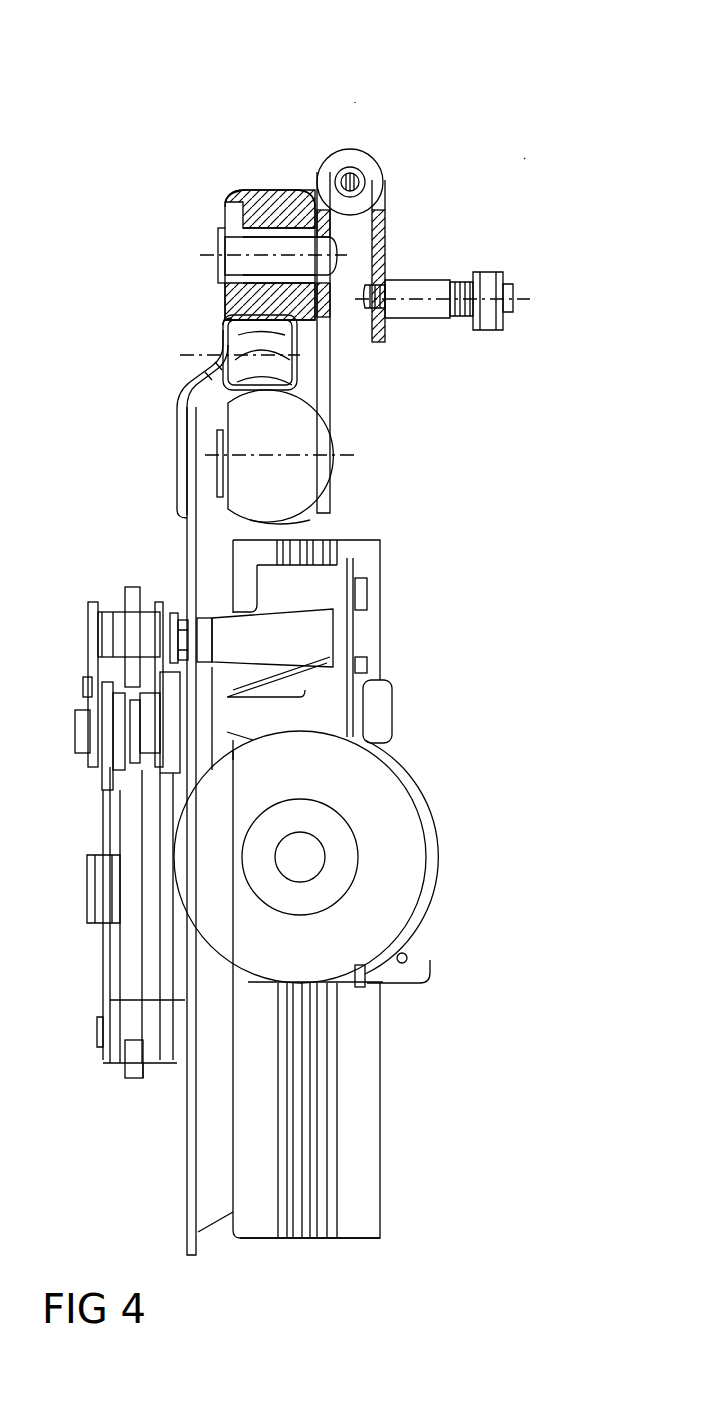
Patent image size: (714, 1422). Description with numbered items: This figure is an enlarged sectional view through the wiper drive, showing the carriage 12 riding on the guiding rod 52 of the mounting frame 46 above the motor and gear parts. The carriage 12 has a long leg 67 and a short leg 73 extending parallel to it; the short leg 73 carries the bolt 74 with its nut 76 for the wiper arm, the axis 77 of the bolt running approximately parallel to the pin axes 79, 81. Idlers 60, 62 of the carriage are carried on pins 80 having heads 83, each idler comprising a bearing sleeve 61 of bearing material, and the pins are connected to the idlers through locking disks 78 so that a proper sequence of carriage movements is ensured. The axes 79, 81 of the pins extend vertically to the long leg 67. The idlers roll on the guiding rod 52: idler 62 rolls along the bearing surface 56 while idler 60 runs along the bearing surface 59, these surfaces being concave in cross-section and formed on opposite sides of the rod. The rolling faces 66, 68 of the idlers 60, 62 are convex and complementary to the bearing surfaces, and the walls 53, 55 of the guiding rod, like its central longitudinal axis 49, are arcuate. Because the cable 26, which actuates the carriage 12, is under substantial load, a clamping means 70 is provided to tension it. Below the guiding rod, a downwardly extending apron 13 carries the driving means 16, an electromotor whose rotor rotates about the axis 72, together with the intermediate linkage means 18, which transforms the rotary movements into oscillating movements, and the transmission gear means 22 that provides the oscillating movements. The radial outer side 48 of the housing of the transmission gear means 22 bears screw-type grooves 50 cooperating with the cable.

The carriage 12 is at (524, 158).
The apron 13 is at (190, 520).
The driving means 16 is at (395, 825).
The intermediate linkage means 18 is at (80, 556).
The transmission gear means 22 is at (428, 1105).
The tensile and/or thrust member 26 is at (355, 170).
The mounting frame 46 is at (192, 1172).
The radial outer side 48 is at (255, 1240).
The central longitudinal axis 49 is at (270, 355).
The screw-type grooves 50 is at (325, 1278).
The guiding rod 52 is at (240, 320).
The wall 53 is at (300, 358).
The wall 55 is at (225, 345).
The bearing surface 56 is at (290, 378).
The bearing surface 59 is at (340, 350).
The idler 60 is at (242, 195).
The bearing sleeve 61 is at (270, 195).
The idler 62 is at (288, 505).
The rolling face 66 is at (295, 197).
The long leg 67 is at (327, 410).
The rolling face 68 is at (285, 522).
The clamping means 70 is at (355, 102).
The axis 72 is at (305, 852).
The short leg 73 is at (378, 228).
The bolt 74 is at (430, 290).
The nut 76 is at (490, 292).
The axis 77 is at (522, 297).
The locking disks 78 is at (227, 205).
The axis 79 is at (205, 262).
The pin 80 is at (225, 245).
The axis 81 is at (345, 465).
The head 83 is at (225, 225).